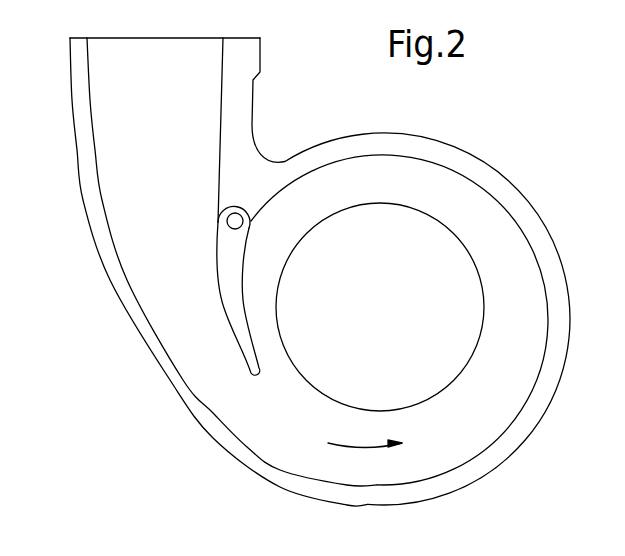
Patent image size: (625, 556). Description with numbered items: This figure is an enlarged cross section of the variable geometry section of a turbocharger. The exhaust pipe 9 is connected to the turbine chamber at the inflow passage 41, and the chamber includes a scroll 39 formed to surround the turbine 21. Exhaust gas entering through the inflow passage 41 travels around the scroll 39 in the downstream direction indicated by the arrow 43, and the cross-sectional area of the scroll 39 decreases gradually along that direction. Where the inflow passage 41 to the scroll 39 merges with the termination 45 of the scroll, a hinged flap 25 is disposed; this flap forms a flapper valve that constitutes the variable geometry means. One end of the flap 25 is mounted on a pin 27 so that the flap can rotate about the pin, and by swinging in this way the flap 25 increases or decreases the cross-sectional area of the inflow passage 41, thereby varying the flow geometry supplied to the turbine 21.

The exhaust pipe 9 is at (200, 45).
The turbine 21 is at (393, 322).
The hinged flap 25 is at (238, 280).
The pin 27 is at (242, 226).
The scroll 39 is at (483, 413).
The inflow passage 41 is at (192, 352).
The arrow 43 is at (358, 448).
The termination 45 is at (278, 342).